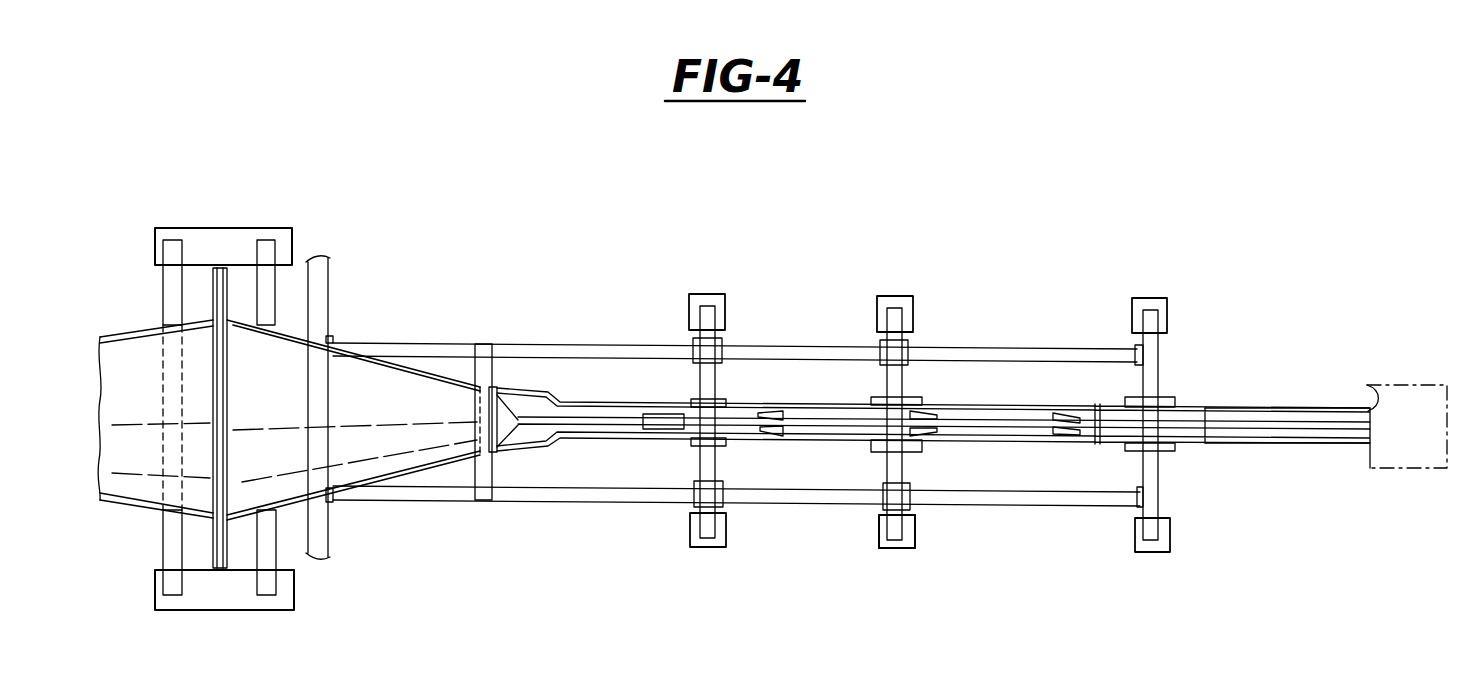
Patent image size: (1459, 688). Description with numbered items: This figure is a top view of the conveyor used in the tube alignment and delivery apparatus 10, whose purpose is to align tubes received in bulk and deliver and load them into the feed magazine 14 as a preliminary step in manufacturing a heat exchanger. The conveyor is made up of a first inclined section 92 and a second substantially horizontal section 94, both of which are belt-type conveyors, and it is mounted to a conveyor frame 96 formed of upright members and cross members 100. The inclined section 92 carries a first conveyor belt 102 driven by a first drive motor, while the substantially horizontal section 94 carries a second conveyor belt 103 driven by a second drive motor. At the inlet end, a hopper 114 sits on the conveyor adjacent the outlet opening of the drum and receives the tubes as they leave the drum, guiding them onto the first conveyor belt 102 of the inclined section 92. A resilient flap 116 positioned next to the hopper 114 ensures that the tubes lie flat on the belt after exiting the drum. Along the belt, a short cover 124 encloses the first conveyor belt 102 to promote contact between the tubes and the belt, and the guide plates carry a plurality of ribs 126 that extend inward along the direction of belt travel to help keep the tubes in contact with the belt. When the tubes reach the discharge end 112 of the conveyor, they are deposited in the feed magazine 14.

The tube alignment and delivery apparatus 10 is at (663, 535).
The feed magazine 14 is at (1405, 455).
The first inclined section 92 is at (1107, 445).
The second substantially horizontal section 94 is at (1240, 432).
The conveyor frame 96 is at (878, 553).
The cross members 100 is at (612, 348).
The first conveyor belt 102 is at (583, 430).
The second conveyor belt 103 is at (1278, 422).
The discharge end 112 is at (1369, 392).
The hopper 114 is at (534, 400).
The resilient flap 116 is at (505, 447).
The short cover 124 is at (662, 414).
The ribs 126 is at (775, 437).